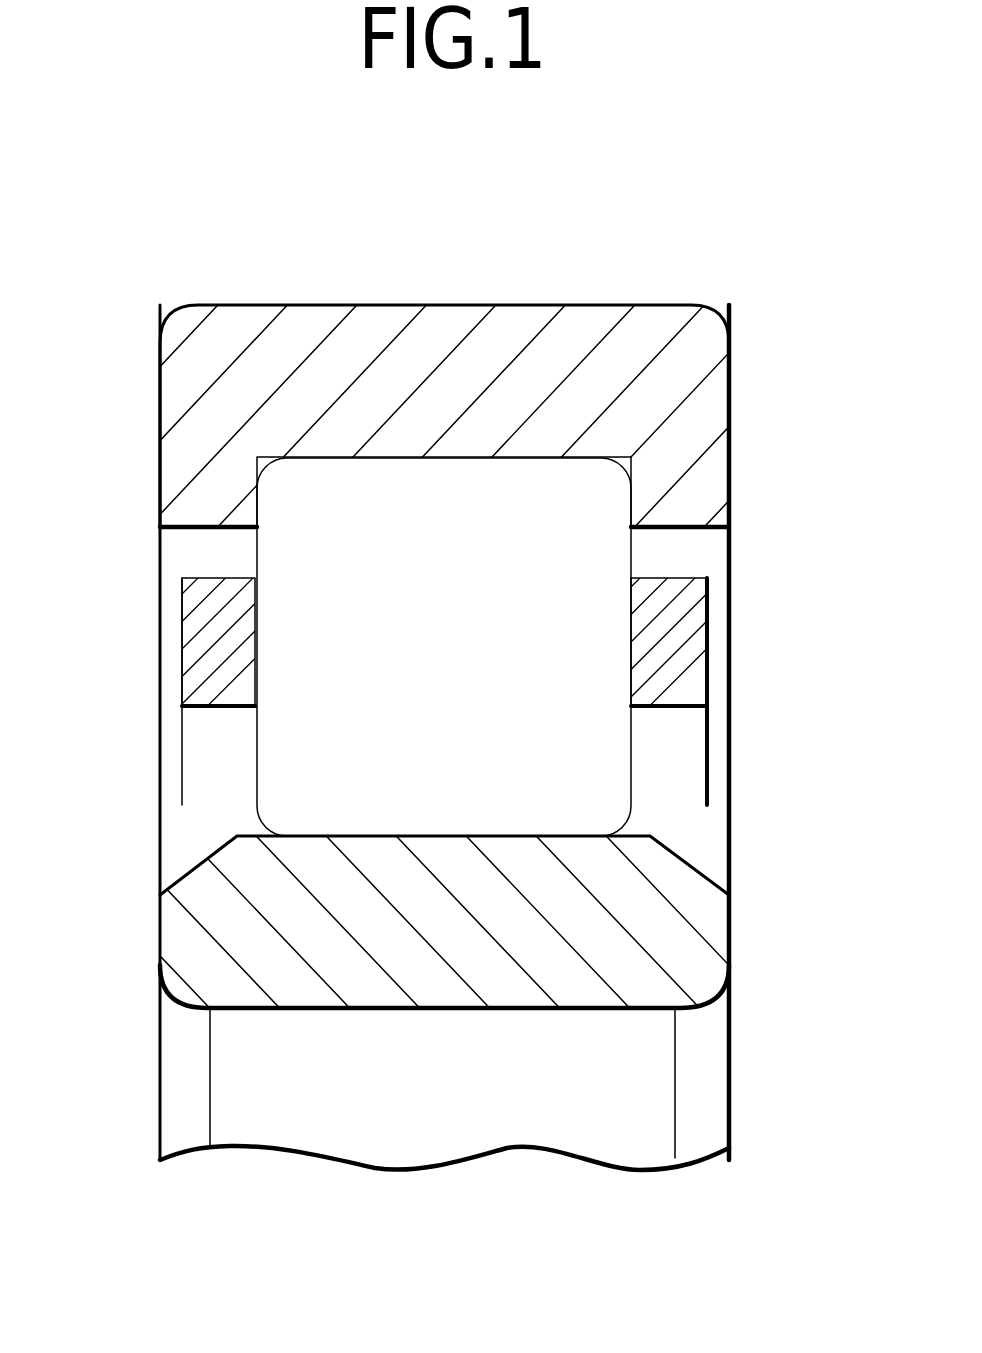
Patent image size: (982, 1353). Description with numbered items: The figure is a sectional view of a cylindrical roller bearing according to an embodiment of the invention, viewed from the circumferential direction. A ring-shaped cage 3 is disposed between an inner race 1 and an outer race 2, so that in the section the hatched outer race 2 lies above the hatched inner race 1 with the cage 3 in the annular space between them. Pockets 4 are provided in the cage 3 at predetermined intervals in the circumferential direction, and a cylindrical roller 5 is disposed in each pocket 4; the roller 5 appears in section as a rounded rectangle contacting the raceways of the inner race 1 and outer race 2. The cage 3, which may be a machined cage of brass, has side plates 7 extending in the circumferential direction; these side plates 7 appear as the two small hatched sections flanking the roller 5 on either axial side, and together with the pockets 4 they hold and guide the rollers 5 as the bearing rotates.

The inner race 1 is at (710, 920).
The outer race 2 is at (695, 416).
The cage 3 is at (718, 683).
The pocket 4 is at (262, 642).
The cylindrical roller 5 is at (454, 497).
The side plate 7 is at (192, 679).